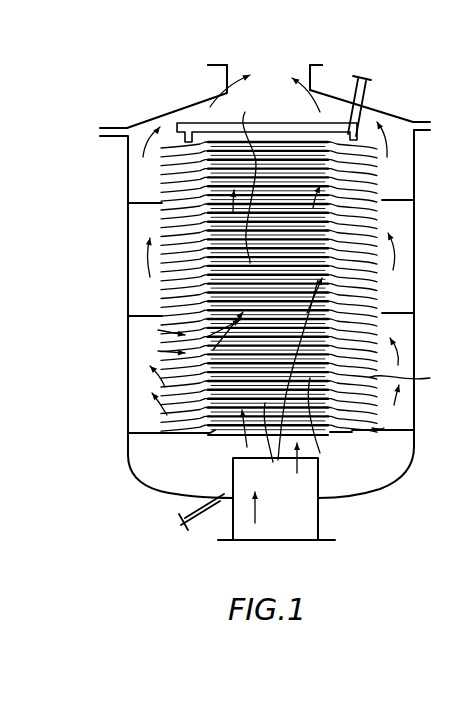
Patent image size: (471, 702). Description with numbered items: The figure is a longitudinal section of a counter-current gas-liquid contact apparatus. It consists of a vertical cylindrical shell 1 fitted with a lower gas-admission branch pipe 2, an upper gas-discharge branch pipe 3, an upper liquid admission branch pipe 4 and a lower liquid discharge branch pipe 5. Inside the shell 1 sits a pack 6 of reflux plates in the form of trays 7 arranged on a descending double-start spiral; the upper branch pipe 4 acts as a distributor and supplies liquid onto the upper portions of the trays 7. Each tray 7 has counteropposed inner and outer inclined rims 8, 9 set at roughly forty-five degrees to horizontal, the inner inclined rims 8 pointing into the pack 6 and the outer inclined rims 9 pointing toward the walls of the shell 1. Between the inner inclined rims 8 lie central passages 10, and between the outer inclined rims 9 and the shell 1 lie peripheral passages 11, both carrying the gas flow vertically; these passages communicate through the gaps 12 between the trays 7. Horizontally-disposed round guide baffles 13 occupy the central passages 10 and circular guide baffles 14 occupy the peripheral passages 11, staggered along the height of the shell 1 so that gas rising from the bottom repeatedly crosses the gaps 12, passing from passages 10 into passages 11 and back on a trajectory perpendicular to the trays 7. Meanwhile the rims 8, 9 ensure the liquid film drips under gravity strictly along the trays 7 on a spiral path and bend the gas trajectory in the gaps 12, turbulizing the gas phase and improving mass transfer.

The shell 1 is at (128, 376).
The lower gas-admission branch pipe 2 is at (233, 542).
The upper gas-discharge branch pipe 3 is at (210, 63).
The upper liquid admission branch pipe 4 is at (372, 83).
The lower liquid discharge branch pipe 5 is at (177, 524).
The pack of reflux plates 6 is at (226, 408).
The tray 7 is at (182, 433).
The inner inclined rim 8 is at (340, 434).
The outer inclined rim 9 is at (380, 432).
The central passage 10 is at (275, 445).
The peripheral passage 11 is at (405, 304).
The gap 12 is at (413, 383).
The round guide baffle 13 is at (295, 283).
The circular guide baffle 14 is at (140, 203).